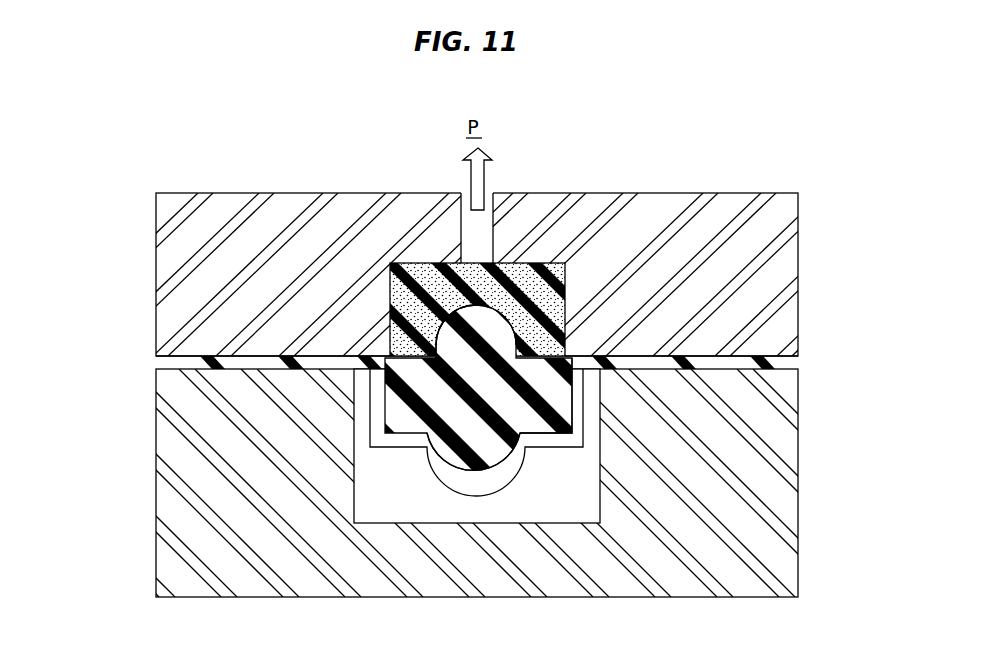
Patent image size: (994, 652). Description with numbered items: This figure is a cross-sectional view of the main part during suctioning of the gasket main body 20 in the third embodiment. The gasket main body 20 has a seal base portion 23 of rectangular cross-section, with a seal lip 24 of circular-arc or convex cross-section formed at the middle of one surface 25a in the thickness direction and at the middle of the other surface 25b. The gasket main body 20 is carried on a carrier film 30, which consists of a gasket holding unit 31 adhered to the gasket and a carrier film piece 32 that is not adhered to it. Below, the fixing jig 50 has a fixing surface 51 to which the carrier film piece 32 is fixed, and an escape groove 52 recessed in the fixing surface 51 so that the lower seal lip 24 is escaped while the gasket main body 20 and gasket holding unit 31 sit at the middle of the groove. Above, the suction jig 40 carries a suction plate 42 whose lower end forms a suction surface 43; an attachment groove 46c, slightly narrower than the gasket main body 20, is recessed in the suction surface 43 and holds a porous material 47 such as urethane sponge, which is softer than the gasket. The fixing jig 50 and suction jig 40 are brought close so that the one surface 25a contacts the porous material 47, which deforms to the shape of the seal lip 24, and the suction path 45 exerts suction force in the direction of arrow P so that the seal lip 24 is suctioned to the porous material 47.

The gasket main body 20 is at (405, 391).
The seal base portion 23 is at (558, 402).
The seal lip 24 is at (468, 323).
The one surface in the thickness direction 25a is at (441, 306).
The another surface in the thickness direction 25b is at (400, 435).
The carrier film 30 is at (255, 353).
The gasket holding unit 31 is at (373, 433).
The carrier film piece 32 is at (742, 357).
The suction jig 40 is at (137, 205).
The suction plate 42 is at (173, 267).
The suction surface 43 is at (718, 357).
The suction path 45 is at (477, 245).
The attachment groove 46c is at (527, 257).
The porous material 47 is at (548, 292).
The fixing jig 50 is at (805, 575).
The fixing surface 51 is at (190, 363).
The escape groove 52 is at (577, 502).